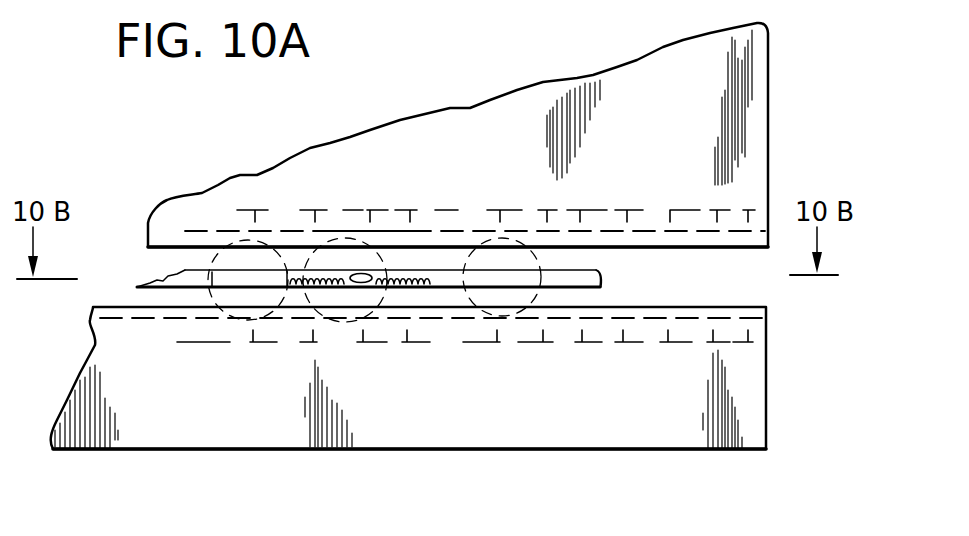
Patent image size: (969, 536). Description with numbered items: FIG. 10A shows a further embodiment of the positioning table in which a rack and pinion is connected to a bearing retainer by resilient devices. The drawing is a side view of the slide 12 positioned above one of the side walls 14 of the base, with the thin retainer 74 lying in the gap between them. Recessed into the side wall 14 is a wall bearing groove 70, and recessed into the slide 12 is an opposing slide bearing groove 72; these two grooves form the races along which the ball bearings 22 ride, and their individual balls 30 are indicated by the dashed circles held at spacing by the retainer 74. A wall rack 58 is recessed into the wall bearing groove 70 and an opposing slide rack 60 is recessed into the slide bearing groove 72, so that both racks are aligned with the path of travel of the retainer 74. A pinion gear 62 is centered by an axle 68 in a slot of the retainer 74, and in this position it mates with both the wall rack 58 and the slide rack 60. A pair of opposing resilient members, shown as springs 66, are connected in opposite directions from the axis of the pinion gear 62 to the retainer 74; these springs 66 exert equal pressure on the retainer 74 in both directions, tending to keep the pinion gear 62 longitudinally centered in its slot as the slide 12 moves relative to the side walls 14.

The slide 12 is at (768, 72).
The side walls 14 is at (515, 450).
The ball bearings 22 is at (411, 262).
The balls 30 is at (225, 300).
The wall rack 58 is at (420, 342).
The slide rack 60 is at (593, 208).
The pinion gear 62 is at (372, 236).
The springs 66 is at (417, 278).
The axle 68 is at (364, 284).
The wall bearing groove 70 is at (767, 320).
The slide bearing groove 72 is at (768, 223).
The retainer 74 is at (600, 288).